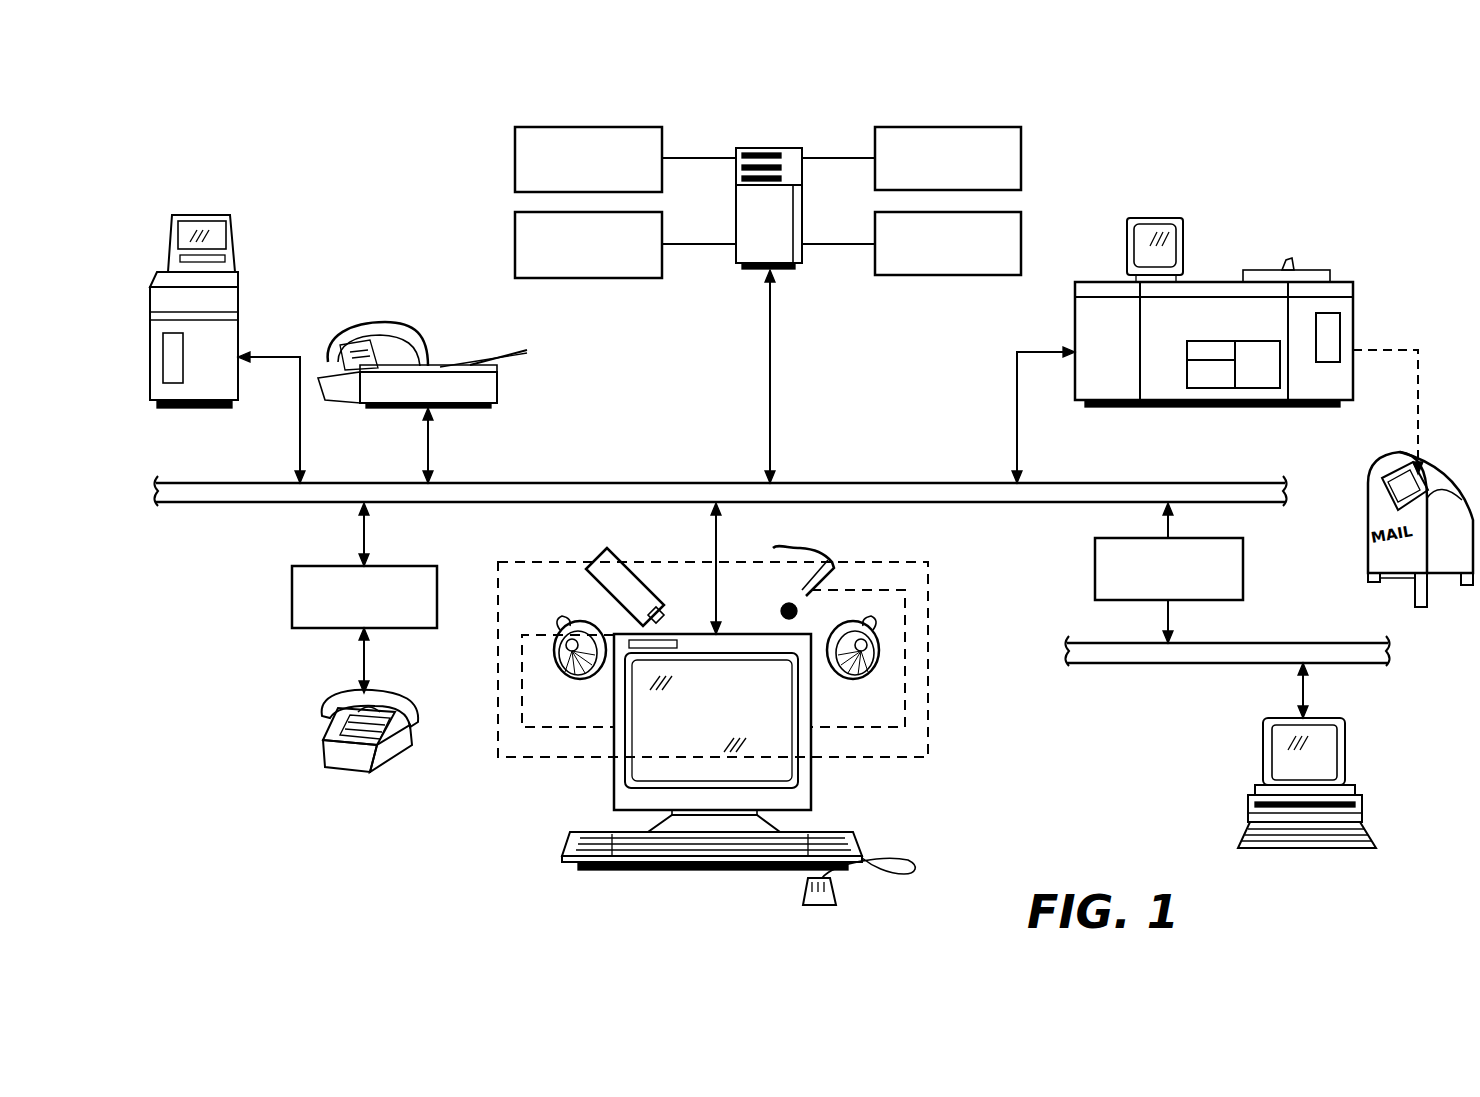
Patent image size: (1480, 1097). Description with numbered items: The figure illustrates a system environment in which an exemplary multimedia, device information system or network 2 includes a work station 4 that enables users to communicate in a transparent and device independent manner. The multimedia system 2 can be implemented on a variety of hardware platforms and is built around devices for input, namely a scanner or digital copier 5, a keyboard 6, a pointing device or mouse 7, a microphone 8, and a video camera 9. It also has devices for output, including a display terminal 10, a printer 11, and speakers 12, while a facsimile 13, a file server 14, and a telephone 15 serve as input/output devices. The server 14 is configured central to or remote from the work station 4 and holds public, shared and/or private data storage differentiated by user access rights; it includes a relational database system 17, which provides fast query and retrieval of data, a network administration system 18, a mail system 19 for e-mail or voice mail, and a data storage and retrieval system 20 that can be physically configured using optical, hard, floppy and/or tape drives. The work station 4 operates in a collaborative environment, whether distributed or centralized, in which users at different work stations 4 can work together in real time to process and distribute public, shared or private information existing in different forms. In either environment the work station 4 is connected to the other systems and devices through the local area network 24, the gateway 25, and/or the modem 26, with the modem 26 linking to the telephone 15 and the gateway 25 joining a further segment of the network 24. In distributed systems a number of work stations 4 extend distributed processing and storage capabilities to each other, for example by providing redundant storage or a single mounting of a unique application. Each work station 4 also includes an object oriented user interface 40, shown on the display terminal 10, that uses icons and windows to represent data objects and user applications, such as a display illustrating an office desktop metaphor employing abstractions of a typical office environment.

The multimedia device information system or network 2 is at (368, 170).
The work station 4 is at (558, 790).
The scanner or digital copier 5 is at (240, 336).
The keyboard 6 is at (815, 832).
The pointing device or mouse 7 is at (836, 905).
The microphone 8 is at (806, 586).
The video camera 9 is at (630, 572).
The display terminal 10 is at (205, 217).
The printer 11 is at (1212, 282).
The speakers 12 is at (572, 680).
The facsimile 13 is at (456, 407).
The file server 14 is at (766, 148).
The telephone 15 is at (362, 773).
The relational database system 17 is at (1021, 145).
The network administration system 18 is at (515, 148).
The mail system 19 is at (912, 275).
The data storage and retrieval system 20 is at (604, 278).
The local area network 24 is at (851, 483).
The gateway 25 is at (1095, 551).
The modem 26 is at (292, 578).
The object oriented user interface 40 is at (224, 239).